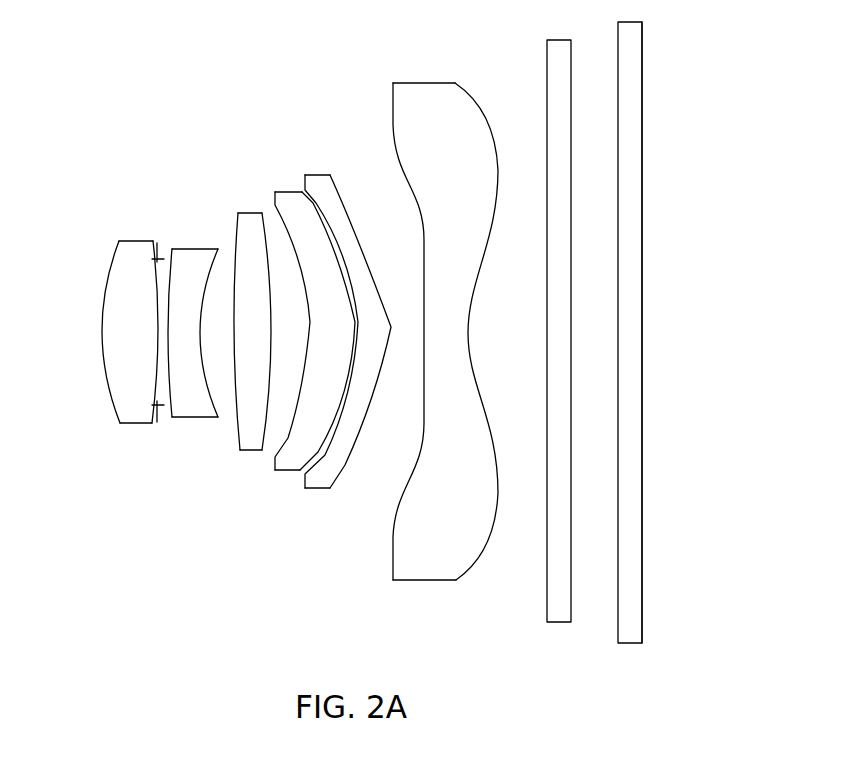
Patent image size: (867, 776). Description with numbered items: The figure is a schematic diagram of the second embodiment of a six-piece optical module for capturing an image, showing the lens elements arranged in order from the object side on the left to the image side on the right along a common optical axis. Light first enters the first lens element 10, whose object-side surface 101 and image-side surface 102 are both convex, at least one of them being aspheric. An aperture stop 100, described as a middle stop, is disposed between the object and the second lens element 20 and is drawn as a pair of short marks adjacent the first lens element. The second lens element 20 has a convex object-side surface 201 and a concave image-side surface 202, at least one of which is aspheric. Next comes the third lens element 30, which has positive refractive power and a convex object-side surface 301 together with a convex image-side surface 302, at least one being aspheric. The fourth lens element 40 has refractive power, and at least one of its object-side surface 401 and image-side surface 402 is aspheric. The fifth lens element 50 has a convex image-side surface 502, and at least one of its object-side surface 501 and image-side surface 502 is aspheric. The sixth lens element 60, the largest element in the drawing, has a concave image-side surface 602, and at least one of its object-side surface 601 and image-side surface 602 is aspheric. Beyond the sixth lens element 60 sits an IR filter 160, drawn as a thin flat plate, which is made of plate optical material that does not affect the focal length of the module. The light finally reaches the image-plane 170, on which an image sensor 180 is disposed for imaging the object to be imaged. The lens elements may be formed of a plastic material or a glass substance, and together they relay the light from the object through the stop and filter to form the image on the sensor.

The first lens element 10 is at (95, 343).
The aperture stop 100 is at (159, 258).
The second lens element 20 is at (159, 343).
The third lens element 30 is at (219, 343).
The fourth lens element 40 is at (296, 343).
The fifth lens element 50 is at (358, 343).
The sixth lens element 60 is at (456, 342).
The object-side surface of the first lens element 101 is at (108, 400).
The image-side surface of the first lens element 102 is at (155, 405).
The object-side surface of the second lens element 201 is at (172, 418).
The image-side surface of the second lens element 202 is at (218, 413).
The object-side surface of the third lens element 301 is at (240, 450).
The image-side surface of the third lens element 302 is at (260, 450).
The object-side surface of the fourth lens element 401 is at (288, 438).
The image-side surface of the fourth lens element 402 is at (317, 452).
The object-side surface of the fifth lens element 501 is at (335, 430).
The image-side surface of the fifth lens element 502 is at (362, 420).
The object-side surface of the sixth lens element 601 is at (398, 518).
The image-side surface of the sixth lens element 602 is at (480, 547).
The IR filter 160 is at (562, 622).
The image-plane 170 is at (619, 83).
The image sensor 180 is at (642, 165).